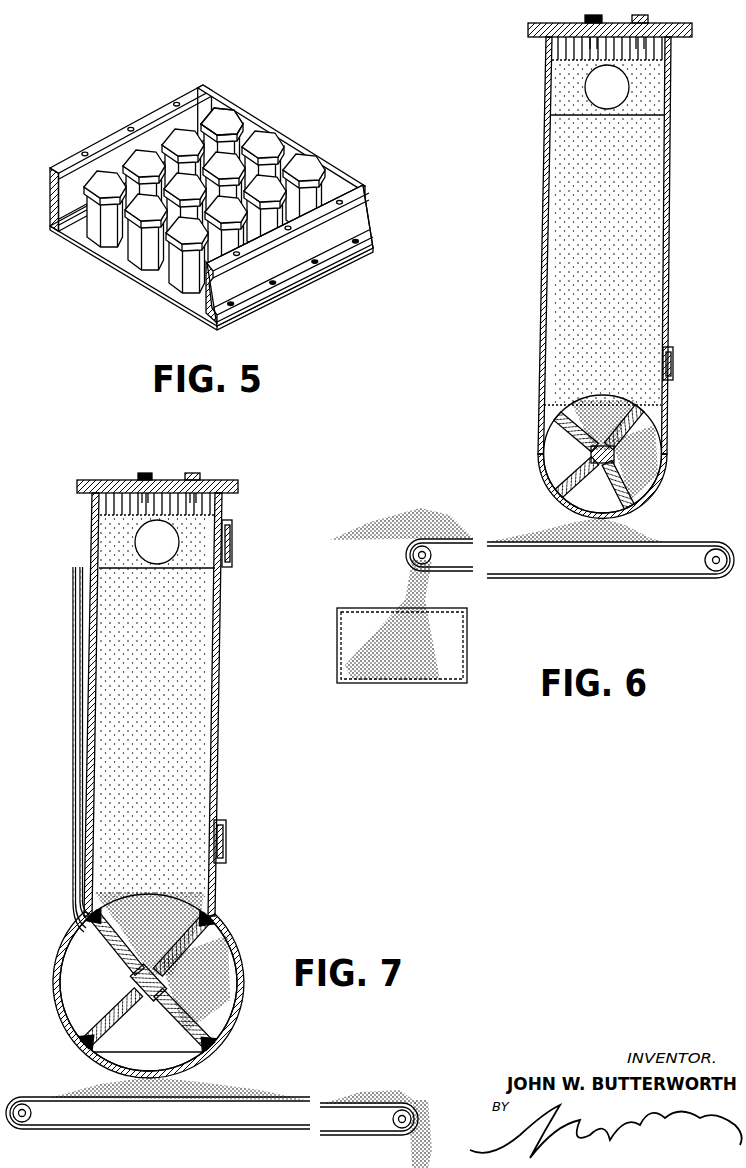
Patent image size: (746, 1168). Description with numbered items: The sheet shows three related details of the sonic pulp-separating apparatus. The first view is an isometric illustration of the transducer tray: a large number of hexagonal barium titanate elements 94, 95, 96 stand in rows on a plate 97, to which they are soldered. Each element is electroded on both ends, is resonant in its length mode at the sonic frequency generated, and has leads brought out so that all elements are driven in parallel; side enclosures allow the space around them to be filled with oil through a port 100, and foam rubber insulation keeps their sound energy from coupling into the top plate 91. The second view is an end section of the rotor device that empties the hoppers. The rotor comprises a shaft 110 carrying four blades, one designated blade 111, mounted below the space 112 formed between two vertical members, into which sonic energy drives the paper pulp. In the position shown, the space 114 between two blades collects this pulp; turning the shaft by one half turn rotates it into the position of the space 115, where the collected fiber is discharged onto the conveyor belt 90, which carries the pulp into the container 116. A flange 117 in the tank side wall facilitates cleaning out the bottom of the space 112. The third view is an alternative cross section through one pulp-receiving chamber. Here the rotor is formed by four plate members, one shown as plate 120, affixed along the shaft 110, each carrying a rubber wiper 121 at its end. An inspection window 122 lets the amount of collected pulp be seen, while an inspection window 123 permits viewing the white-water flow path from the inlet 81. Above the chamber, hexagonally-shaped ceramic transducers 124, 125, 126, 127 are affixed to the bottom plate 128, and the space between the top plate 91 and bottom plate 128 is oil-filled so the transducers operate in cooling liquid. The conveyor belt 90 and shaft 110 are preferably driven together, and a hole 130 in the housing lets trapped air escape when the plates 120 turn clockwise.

In FIG. 7, the inlet 81 is at (143, 545).
In FIG. 6, the conveyor belt 90 is at (648, 580).
In FIG. 7, the conveyor belt 90 is at (157, 1132).
In FIG. 7, the top plate 91 is at (218, 482).
In FIG. 5, the hexagonal barium titanate element 94 is at (214, 205).
In FIG. 5, the hexagonal barium titanate element 95 is at (211, 189).
In FIG. 5, the hexagonal barium titanate element 96 is at (227, 118).
In FIG. 5, the plate 97 is at (195, 313).
In FIG. 6, the port 100 is at (648, 16).
In FIG. 7, the port 100 is at (191, 475).
In FIG. 6, the shaft 110 is at (591, 459).
In FIG. 7, the shaft 110 is at (149, 992).
In FIG. 6, the blade 111 is at (565, 478).
In FIG. 6, the space 112 is at (641, 210).
In FIG. 6, the space 114 is at (592, 412).
In FIG. 6, the space 115 is at (612, 505).
In FIG. 6, the container 116 is at (468, 632).
In FIG. 6, the flange 117 is at (674, 376).
In FIG. 7, the plate member 120 is at (125, 1000).
In FIG. 7, the rubber wiper 121 is at (92, 1040).
In FIG. 7, the inspection window 122 is at (228, 845).
In FIG. 7, the inspection window 123 is at (235, 545).
In FIG. 7, the hexagonally-shaped ceramic transducer 124 is at (130, 508).
In FIG. 7, the hexagonally-shaped ceramic transducer 125 is at (165, 498).
In FIG. 7, the hexagonally-shaped ceramic transducer 126 is at (183, 508).
In FIG. 7, the hexagonally-shaped ceramic transducer 127 is at (223, 507).
In FIG. 7, the bottom plate 128 is at (110, 492).
In FIG. 7, the hole 130 is at (84, 930).